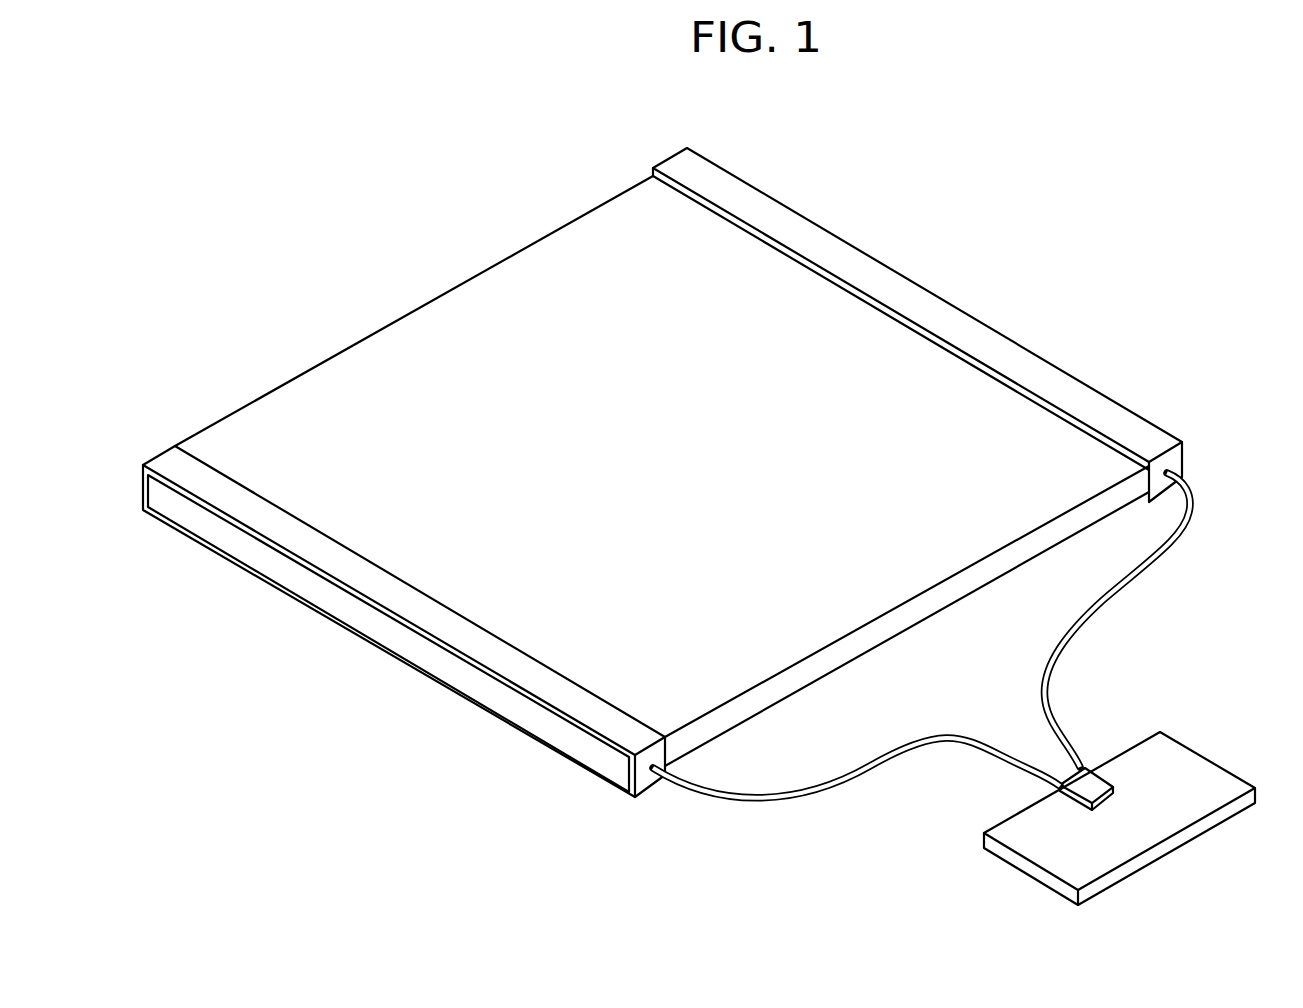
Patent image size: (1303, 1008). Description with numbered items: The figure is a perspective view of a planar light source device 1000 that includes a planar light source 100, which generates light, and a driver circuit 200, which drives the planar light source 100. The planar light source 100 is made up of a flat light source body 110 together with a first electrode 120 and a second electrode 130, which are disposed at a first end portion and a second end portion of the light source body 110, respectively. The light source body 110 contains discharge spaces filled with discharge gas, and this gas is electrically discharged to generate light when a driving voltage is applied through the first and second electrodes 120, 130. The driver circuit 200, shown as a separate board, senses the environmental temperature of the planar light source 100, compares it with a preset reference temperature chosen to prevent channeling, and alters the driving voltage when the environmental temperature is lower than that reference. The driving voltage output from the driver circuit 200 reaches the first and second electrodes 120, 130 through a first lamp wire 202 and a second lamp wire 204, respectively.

The planar light source device 1000 is at (713, 78).
The planar light source 100 is at (458, 260).
The light source body 110 is at (618, 205).
The first electrode 120 is at (437, 622).
The second electrode 130 is at (930, 298).
The driver circuit 200 is at (1214, 728).
The first lamp wire 202 is at (853, 776).
The second lamp wire 204 is at (1097, 612).